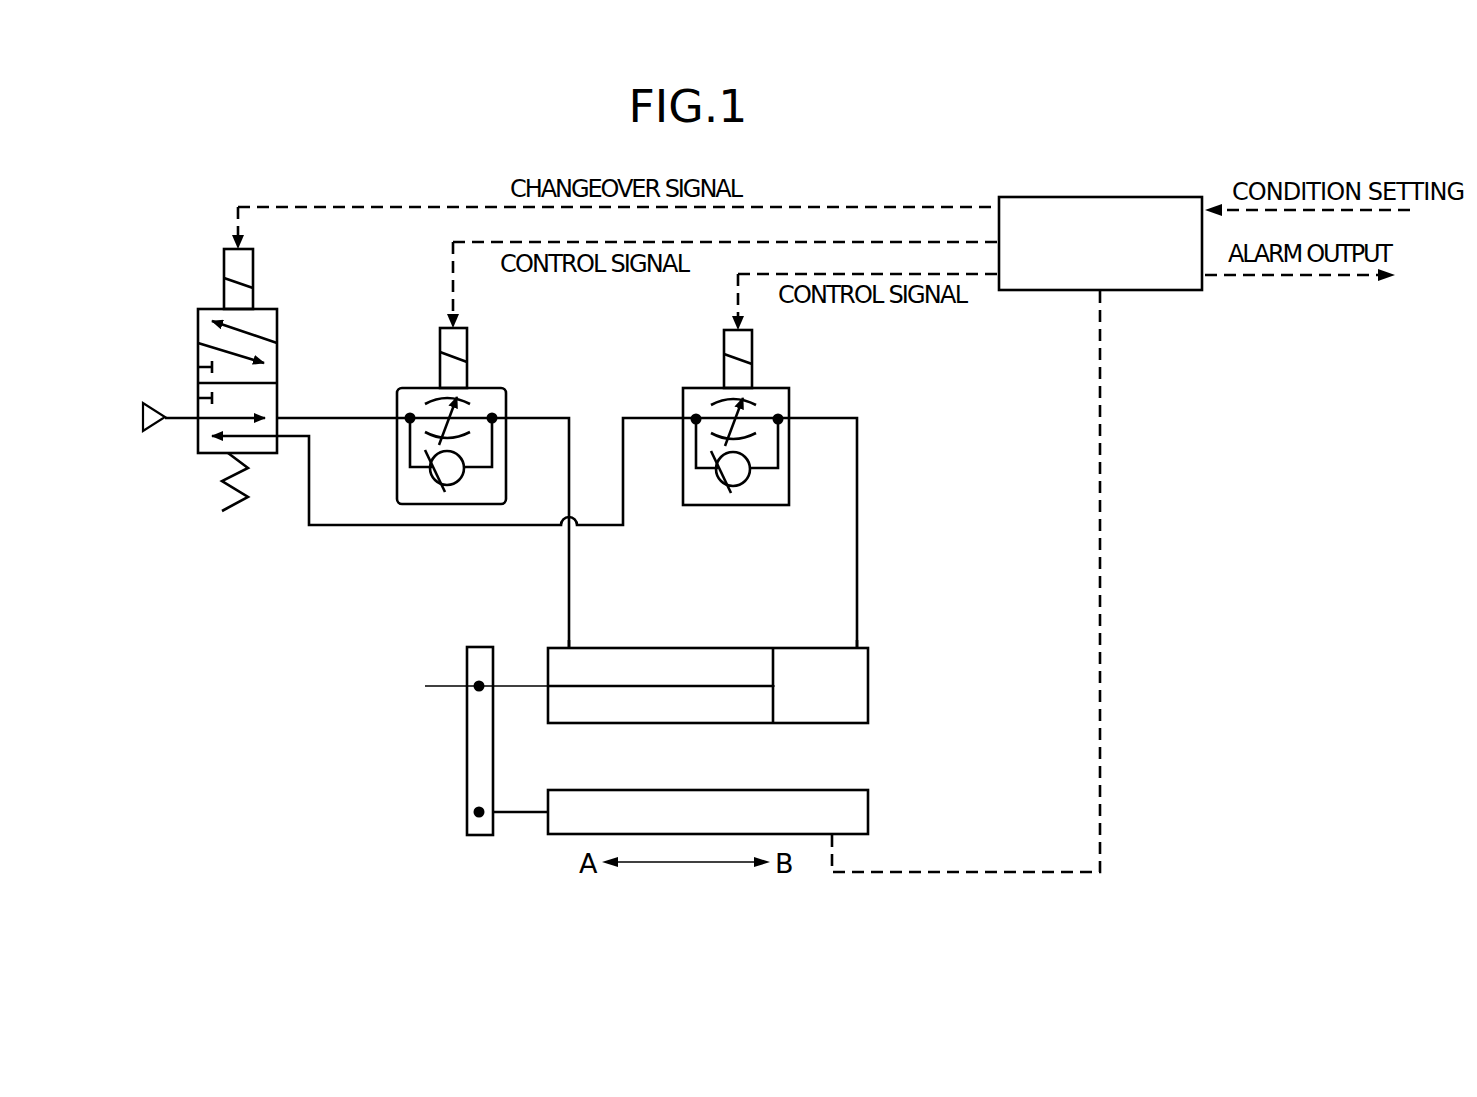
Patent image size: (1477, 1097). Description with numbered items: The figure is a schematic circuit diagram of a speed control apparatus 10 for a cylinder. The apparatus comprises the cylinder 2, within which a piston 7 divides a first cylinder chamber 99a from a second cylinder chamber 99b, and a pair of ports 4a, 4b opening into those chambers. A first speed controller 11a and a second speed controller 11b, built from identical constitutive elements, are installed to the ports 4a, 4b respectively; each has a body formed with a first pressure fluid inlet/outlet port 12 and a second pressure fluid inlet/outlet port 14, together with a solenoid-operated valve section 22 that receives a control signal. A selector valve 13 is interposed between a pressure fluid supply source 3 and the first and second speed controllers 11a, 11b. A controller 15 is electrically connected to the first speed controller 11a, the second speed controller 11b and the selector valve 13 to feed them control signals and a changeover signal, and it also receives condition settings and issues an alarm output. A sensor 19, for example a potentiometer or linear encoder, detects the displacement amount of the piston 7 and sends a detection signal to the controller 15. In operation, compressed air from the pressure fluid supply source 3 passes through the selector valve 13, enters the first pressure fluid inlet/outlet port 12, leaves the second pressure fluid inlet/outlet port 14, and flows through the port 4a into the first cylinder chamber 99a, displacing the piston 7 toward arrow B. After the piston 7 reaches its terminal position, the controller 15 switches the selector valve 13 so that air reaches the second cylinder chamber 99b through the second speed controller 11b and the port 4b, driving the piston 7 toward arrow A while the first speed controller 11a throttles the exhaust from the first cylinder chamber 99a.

The speed control apparatus 10 is at (961, 141).
The controller 15 is at (1152, 197).
The pressure fluid supply source 3 is at (158, 403).
The selector valve 13 is at (282, 323).
The first speed controller 11a is at (510, 387).
The second speed controller 11b is at (795, 387).
The solenoid-operated valve section 22 is at (460, 346).
The first pressure fluid inlet/outlet port 12 is at (408, 416).
The second pressure fluid inlet/outlet port 14 is at (496, 416).
The cylinder 2 is at (692, 646).
The piston 7 is at (781, 708).
The first cylinder chamber 99a is at (664, 708).
The second cylinder chamber 99b is at (853, 705).
The port 4a is at (570, 646).
The port 4b is at (858, 646).
The sensor 19 is at (575, 790).